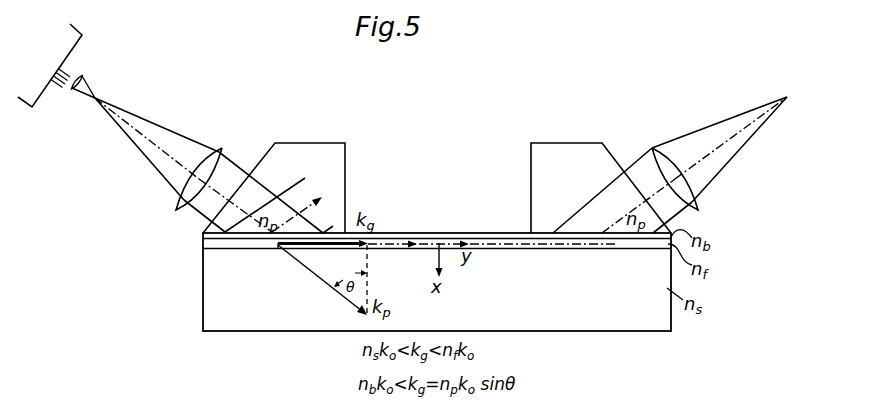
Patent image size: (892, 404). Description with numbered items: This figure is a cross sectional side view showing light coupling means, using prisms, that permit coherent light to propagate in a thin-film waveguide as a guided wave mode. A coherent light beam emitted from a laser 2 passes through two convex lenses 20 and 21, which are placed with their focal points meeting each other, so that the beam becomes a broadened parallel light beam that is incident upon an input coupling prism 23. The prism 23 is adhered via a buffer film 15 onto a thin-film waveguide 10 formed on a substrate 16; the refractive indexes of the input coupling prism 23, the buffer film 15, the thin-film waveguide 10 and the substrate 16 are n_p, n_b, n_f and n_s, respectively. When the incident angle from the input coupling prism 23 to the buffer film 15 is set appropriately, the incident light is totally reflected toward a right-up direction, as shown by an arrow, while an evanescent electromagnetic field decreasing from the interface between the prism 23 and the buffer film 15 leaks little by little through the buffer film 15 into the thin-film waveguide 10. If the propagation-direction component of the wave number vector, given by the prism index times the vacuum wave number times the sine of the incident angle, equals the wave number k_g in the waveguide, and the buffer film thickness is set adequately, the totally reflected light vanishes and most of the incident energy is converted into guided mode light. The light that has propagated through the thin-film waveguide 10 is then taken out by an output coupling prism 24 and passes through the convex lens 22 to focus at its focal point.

The laser 2 is at (82, 35).
The convex lens 20 is at (66, 90).
The convex lens 21 is at (202, 167).
The convex lens 22 is at (660, 153).
The input coupling prism 23 is at (310, 147).
The output coupling prism 24 is at (548, 148).
The thin-film waveguide 10 is at (487, 247).
The buffer film 15 is at (422, 238).
The substrate 16 is at (393, 260).